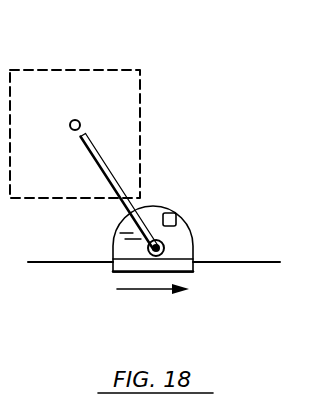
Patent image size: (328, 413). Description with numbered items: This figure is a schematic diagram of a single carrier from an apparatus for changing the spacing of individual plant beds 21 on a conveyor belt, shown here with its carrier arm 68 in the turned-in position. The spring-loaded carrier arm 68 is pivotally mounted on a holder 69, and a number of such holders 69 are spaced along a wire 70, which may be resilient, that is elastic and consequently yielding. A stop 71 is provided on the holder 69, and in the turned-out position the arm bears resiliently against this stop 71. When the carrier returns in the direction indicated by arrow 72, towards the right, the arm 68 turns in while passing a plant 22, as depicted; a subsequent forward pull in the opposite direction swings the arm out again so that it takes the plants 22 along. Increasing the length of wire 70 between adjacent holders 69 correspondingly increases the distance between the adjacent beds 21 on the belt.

The bed 21 is at (68, 76).
The plant 22 is at (82, 123).
The carrier arm 68 is at (116, 172).
The holder 69 is at (181, 247).
The wire 70 is at (255, 263).
The stop 71 is at (177, 216).
The arrow 72 is at (157, 290).